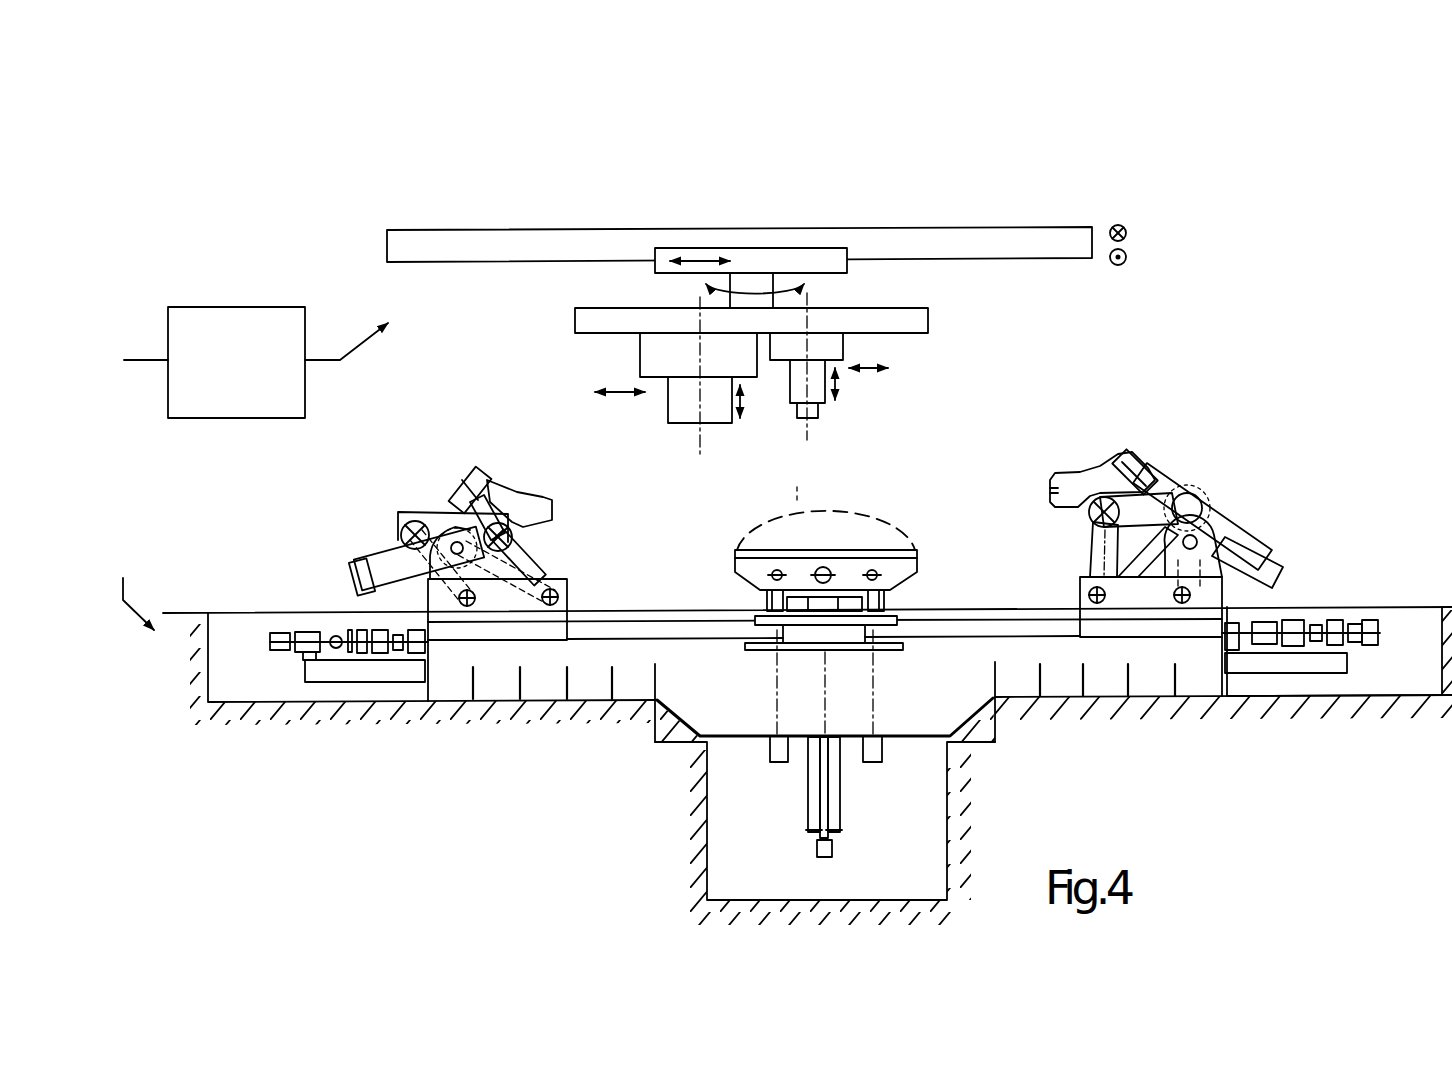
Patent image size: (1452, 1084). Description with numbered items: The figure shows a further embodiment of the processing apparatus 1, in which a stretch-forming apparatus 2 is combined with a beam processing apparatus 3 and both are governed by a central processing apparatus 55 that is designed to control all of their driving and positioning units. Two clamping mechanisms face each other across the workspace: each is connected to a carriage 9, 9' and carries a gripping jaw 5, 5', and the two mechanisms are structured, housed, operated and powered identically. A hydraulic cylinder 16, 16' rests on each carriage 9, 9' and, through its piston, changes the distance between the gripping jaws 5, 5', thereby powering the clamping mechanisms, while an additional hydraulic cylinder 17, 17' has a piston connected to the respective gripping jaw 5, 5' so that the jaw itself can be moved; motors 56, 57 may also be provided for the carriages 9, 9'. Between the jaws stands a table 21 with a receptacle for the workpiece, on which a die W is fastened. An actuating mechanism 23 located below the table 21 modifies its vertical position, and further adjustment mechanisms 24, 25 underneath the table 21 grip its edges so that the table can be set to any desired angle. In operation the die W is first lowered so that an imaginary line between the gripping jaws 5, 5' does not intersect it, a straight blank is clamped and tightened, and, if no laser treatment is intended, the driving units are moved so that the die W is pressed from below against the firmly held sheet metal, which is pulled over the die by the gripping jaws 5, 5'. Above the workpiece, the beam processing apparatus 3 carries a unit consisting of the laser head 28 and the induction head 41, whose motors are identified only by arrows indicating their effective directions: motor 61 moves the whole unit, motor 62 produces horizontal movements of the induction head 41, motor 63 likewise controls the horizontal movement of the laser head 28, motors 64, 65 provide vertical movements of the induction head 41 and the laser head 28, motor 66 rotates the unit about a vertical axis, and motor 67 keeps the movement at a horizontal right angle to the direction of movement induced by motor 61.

The processing apparatus 1 is at (1318, 280).
The stretch-forming apparatus 2 is at (630, 812).
The beam processing apparatus 3 is at (1074, 206).
The gripping jaw 5 is at (523, 497).
The gripping jaw 5' is at (1095, 454).
The carriage 9 is at (520, 583).
The carriage 9' is at (1119, 576).
The hydraulic cylinder 16 is at (359, 581).
The hydraulic cylinder 16' is at (1289, 543).
The hydraulic cylinder 17 is at (433, 526).
The hydraulic cylinder 17' is at (1213, 505).
The table 21 is at (912, 574).
The actuating mechanism 23 is at (808, 800).
The adjustment mechanism 24 is at (770, 762).
The adjustment mechanism 25 is at (876, 758).
The laser head 28 is at (789, 407).
The induction head 41 is at (684, 410).
The central processing apparatus 55 is at (256, 380).
The motor 56 is at (287, 652).
The motor 57 is at (1345, 642).
The motor 61 is at (712, 262).
The motor 62 is at (621, 393).
The motor 63 is at (866, 369).
The motor 64 is at (742, 400).
The motor 65 is at (836, 382).
The motor 66 is at (830, 297).
The motor 67 is at (1142, 247).
The die W is at (895, 532).